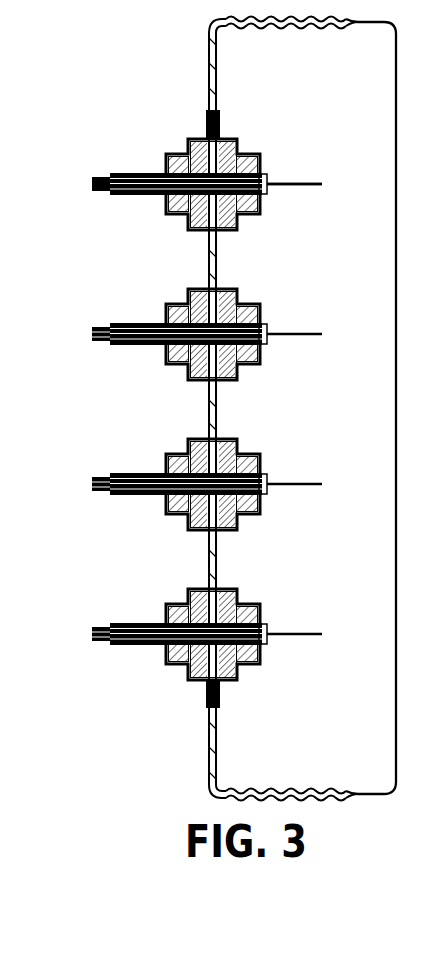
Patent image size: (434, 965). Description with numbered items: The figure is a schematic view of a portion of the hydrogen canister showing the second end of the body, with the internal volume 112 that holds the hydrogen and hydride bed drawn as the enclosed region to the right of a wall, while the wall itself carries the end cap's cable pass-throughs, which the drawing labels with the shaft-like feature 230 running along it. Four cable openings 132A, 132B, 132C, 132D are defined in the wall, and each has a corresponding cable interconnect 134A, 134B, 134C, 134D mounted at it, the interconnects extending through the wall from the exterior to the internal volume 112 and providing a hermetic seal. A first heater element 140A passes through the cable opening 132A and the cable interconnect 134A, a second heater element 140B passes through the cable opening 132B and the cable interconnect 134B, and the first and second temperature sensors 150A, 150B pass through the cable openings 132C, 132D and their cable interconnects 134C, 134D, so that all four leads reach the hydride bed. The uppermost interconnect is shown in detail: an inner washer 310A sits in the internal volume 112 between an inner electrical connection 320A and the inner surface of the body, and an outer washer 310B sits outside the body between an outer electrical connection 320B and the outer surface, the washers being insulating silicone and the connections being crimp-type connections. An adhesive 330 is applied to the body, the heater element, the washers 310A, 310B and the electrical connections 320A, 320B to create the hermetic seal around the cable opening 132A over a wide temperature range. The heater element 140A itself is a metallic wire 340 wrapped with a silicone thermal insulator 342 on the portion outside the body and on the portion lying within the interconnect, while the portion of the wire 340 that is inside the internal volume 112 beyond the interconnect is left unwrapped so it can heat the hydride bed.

The internal volume 112 is at (321, 62).
The shaft 230 is at (209, 50).
The adhesive 330 is at (208, 140).
The cable opening 132A is at (153, 146).
The cable interconnect 134A is at (126, 150).
The cable opening 132B is at (146, 323).
The cable interconnect 134B is at (162, 293).
The cable opening 132C is at (151, 471).
The cable interconnect 134C is at (171, 440).
The cable opening 132D is at (149, 620).
The cable interconnect 134D is at (169, 590).
The inner washer 310A is at (232, 140).
The outer washer 310B is at (190, 147).
The inner electrical connection 320A is at (264, 163).
The outer electrical connection 320B is at (168, 160).
The metallic wire 340 is at (307, 182).
The thermal insulator 342 is at (140, 198).
The heater element 140A is at (180, 190).
The heater element 140B is at (101, 348).
The first temperature sensor 150A is at (101, 497).
The second temperature sensor 150B is at (101, 647).